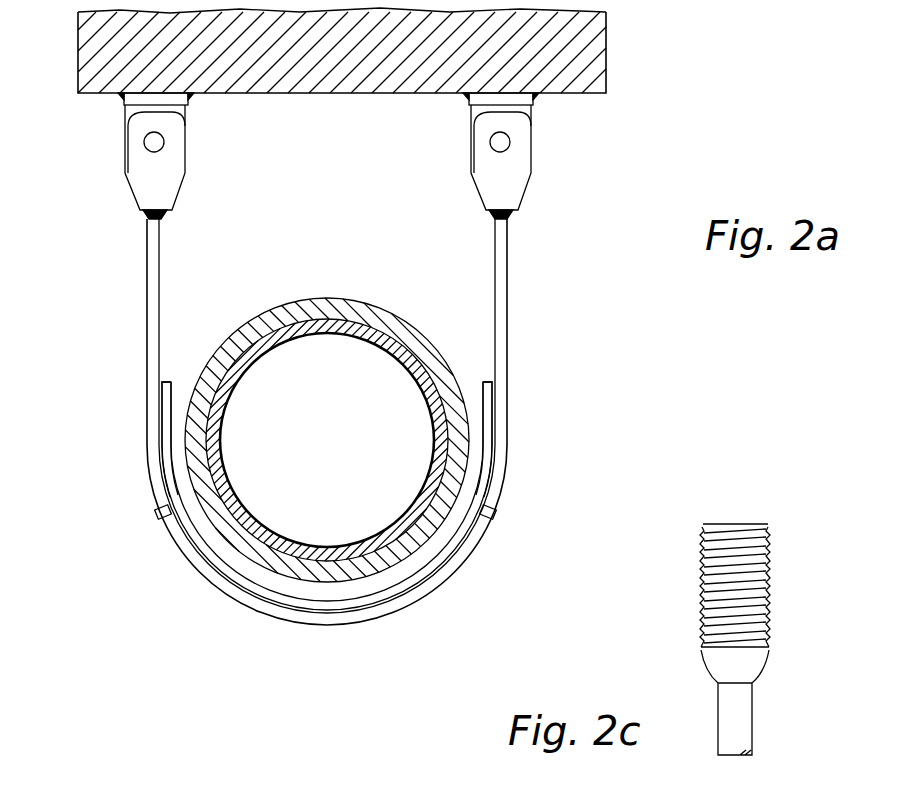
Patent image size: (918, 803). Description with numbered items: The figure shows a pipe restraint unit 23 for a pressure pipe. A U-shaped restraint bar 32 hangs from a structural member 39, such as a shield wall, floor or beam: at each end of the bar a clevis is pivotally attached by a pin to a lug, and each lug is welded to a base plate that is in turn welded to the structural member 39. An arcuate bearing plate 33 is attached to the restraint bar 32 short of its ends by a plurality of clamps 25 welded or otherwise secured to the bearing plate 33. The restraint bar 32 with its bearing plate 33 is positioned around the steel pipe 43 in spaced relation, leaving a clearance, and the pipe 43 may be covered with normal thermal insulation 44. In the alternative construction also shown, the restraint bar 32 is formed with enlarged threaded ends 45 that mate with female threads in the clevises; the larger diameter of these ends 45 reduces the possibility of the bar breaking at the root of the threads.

In FIG. 2A, the pipe restraint unit 23 is at (550, 382).
In FIG. 2A, the clamps 25 is at (160, 517).
In FIG. 2A, the U-shaped restraint bar 32 is at (508, 298).
In FIG. 2C, the U-shaped restraint bar 32 is at (752, 715).
In FIG. 2A, the bearing plate 33 is at (452, 548).
In FIG. 2A, the structural member 39 is at (606, 50).
In FIG. 2A, the steel pipe 43 is at (336, 334).
In FIG. 2A, the thermal insulation 44 is at (334, 297).
In FIG. 2C, the enlarged threaded ends 45 is at (762, 598).